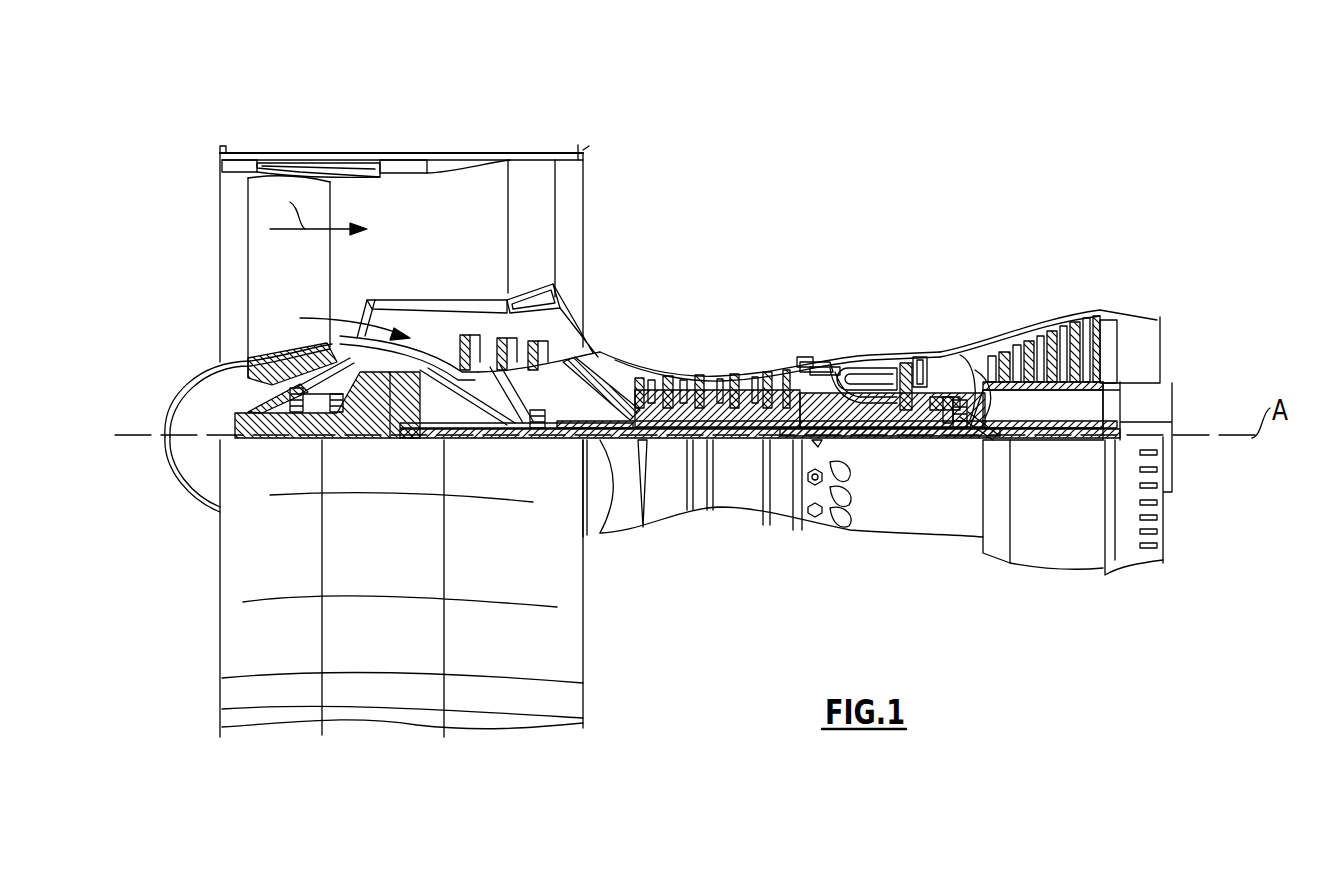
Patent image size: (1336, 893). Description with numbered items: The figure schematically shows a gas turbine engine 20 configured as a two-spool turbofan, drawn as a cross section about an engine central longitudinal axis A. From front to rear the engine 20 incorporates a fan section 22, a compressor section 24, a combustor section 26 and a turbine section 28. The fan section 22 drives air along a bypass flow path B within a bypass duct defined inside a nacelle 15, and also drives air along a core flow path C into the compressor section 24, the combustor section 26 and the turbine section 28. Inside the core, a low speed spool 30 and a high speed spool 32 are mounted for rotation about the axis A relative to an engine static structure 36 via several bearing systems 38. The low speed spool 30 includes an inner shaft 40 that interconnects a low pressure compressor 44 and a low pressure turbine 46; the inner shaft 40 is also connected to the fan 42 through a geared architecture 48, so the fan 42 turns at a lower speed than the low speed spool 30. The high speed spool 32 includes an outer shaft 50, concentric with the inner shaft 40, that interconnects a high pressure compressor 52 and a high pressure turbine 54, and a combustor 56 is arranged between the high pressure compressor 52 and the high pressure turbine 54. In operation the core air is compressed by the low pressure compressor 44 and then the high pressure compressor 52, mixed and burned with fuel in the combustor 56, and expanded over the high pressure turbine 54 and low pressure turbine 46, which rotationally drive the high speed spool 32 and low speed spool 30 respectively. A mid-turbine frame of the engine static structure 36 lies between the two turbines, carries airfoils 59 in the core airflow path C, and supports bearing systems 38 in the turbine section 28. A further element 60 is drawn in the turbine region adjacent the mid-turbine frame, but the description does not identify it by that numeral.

The nacelle 15 is at (403, 158).
The gas turbine engine 20 is at (858, 208).
The fan section 22 is at (332, 149).
The compressor section 24 is at (632, 349).
The combustor section 26 is at (855, 338).
The turbine section 28 is at (1003, 300).
The low speed spool 30 is at (738, 440).
The high speed spool 32 is at (787, 367).
The engine static structure 36 is at (780, 523).
The bearing systems 38 is at (543, 440).
The inner shaft 40 is at (609, 530).
The fan 42 is at (305, 284).
The low pressure compressor 44 is at (500, 347).
The low pressure turbine 46 is at (1047, 313).
The geared architecture 48 is at (408, 420).
The outer shaft 50 is at (860, 418).
The high pressure compressor 52 is at (712, 402).
The high pressure turbine 54 is at (920, 357).
The combustor 56 is at (853, 378).
The airfoils 59 is at (993, 408).
The mid-turbine frame 60 is at (965, 347).